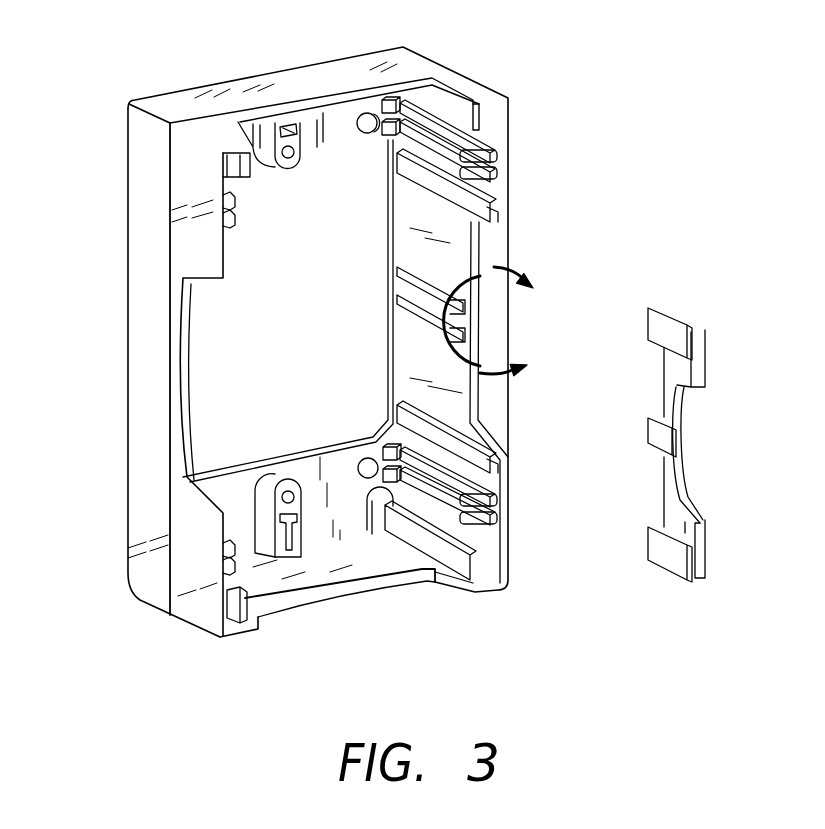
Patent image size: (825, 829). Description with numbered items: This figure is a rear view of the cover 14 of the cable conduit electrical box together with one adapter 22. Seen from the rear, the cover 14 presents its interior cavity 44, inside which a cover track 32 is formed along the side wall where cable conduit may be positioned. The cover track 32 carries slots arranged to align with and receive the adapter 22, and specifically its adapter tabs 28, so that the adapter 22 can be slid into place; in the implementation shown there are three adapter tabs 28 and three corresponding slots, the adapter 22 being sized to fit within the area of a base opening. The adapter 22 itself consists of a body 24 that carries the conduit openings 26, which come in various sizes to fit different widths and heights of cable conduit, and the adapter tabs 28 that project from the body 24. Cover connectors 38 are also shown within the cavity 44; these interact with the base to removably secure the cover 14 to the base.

The cover 14 is at (514, 91).
The adapter 22 is at (710, 335).
The body 24 is at (698, 521).
The conduit openings 26 is at (680, 448).
The adapter tabs 28 is at (658, 308).
The cover track 32 is at (486, 224).
The cover connectors 38 is at (493, 174).
The interior cavity 44 is at (341, 143).